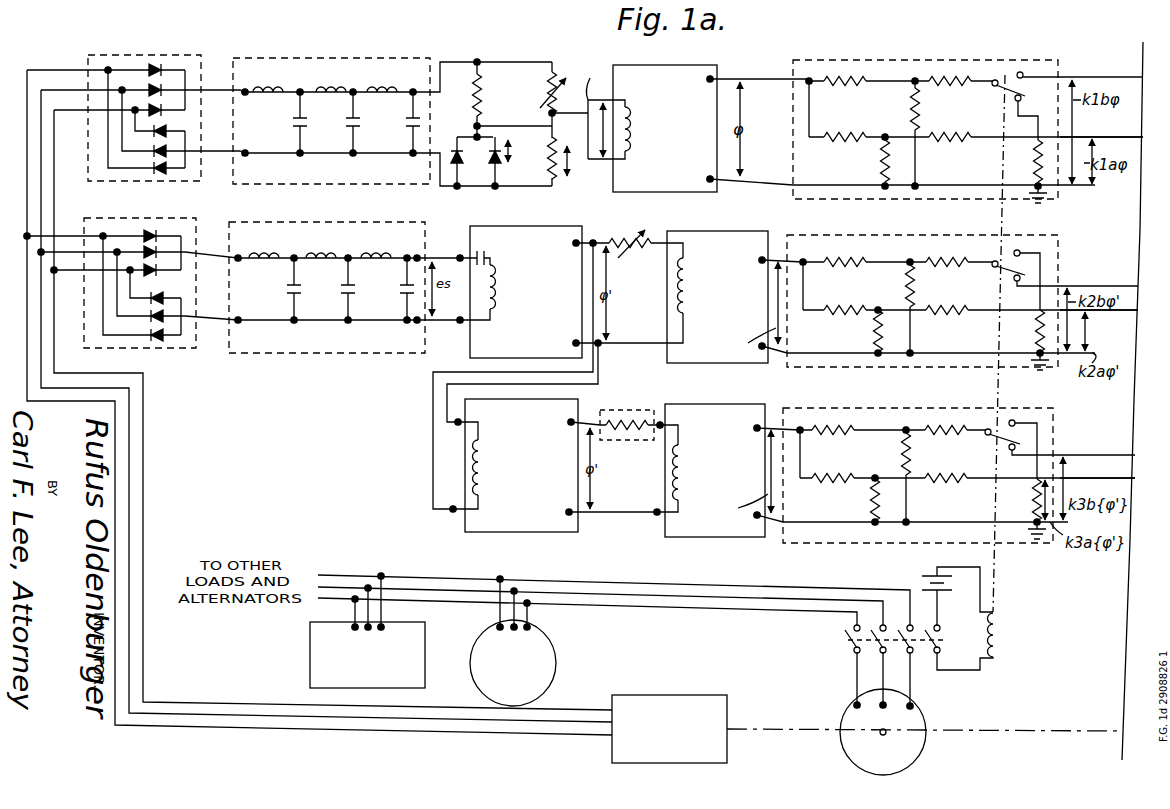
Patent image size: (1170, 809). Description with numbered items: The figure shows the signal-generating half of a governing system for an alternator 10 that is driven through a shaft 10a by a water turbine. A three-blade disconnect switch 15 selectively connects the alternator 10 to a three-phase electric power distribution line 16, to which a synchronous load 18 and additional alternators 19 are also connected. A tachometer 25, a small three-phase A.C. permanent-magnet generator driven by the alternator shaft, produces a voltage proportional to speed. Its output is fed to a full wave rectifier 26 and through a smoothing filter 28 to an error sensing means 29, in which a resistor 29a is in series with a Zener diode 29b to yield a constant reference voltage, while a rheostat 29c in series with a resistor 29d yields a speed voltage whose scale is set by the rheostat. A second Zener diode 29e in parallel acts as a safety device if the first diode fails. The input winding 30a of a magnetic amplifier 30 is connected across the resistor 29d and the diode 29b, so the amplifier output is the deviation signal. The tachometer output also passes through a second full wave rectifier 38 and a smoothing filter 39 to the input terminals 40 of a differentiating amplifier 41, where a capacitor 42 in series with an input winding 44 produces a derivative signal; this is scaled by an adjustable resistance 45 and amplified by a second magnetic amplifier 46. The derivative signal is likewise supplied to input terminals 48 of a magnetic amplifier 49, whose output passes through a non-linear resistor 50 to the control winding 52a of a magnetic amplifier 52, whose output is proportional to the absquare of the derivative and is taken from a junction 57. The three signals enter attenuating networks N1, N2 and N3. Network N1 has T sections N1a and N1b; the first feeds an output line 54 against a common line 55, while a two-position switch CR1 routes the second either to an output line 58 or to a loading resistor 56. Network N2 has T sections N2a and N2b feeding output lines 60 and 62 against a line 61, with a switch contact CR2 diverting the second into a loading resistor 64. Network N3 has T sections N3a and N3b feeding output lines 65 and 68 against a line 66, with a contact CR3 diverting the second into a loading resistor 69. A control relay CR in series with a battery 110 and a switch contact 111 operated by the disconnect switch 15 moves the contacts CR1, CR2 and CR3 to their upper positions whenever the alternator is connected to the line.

The full wave rectifier 26 is at (143, 54).
The smoothing filter 28 is at (257, 57).
The error sensing means 29 is at (505, 123).
The resistor 29a is at (479, 93).
The Zener diode 29b is at (491, 164).
The rheostat 29c is at (543, 101).
The resistor 29d is at (553, 190).
The second Zener diode 29e is at (452, 161).
The magnetic amplifier 30 is at (665, 115).
The input winding 30a is at (631, 110).
The second full wave rectifier 38 is at (128, 218).
The smoothing filter 39 is at (243, 222).
The input terminals 40 is at (461, 319).
The differentiating amplifier 41 is at (526, 280).
The capacitor 42 is at (486, 254).
The input winding 44 is at (496, 288).
The adjustable resistance 45 is at (622, 234).
The second magnetic amplifier 46 is at (748, 231).
The input terminals 48 is at (458, 426).
The magnetic amplifier 49 is at (506, 480).
The non-linear resistor 50 is at (628, 418).
The magnetic amplifier 52 is at (716, 456).
The control or input winding 52a is at (686, 448).
The junction terminal 57 is at (656, 508).
The attenuating network N1 is at (968, 115).
The resistor T section N1a is at (876, 148).
The resistor T section N1b is at (908, 88).
The two-position switch CR1 is at (1016, 72).
The output line 58 is at (1113, 77).
The output line 54 is at (1110, 137).
The common line 55 is at (962, 185).
The loading resistor 56 is at (1034, 163).
The attenuating network N2 is at (962, 291).
The resistive T section N2a is at (872, 315).
The resistive T section N2b is at (905, 268).
The two-position switch contact CR2 is at (1016, 250).
The output line 62 is at (1118, 285).
The output line 60 is at (1112, 312).
The output line 61 is at (980, 353).
The loading resistor 64 is at (1036, 330).
The attenuating network N3 is at (959, 465).
The resistive T section N3a is at (867, 483).
The resistive T section N3b is at (900, 436).
The two-position switch contact CR3 is at (1008, 420).
The output line 68 is at (1100, 455).
The output line 65 is at (1112, 478).
The output line 66 is at (940, 522).
The loading resistor 69 is at (1032, 500).
The electric power distribution line 16 is at (708, 585).
The synchronous load 18 is at (425, 636).
The additional alternators 19 is at (540, 643).
The 3-blade disconnect switch 15 is at (845, 640).
The battery 110 is at (921, 577).
The control relay CR is at (1000, 640).
The switch contact 111 is at (938, 654).
The alternator 10 is at (918, 722).
The shaft 10a is at (1015, 732).
The tachometer 25 is at (716, 695).